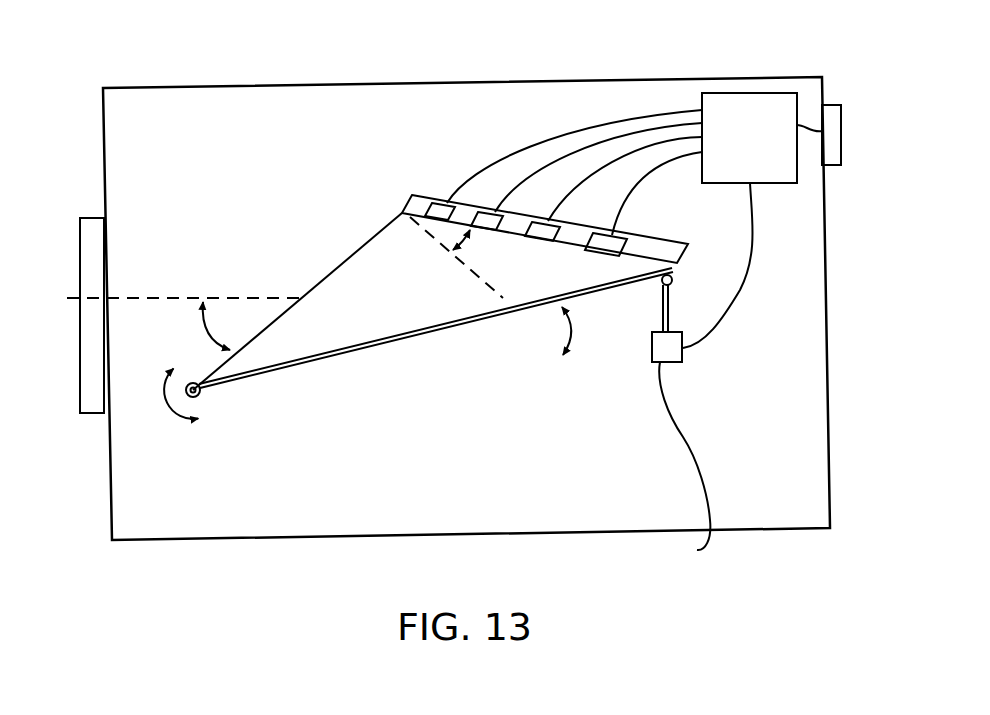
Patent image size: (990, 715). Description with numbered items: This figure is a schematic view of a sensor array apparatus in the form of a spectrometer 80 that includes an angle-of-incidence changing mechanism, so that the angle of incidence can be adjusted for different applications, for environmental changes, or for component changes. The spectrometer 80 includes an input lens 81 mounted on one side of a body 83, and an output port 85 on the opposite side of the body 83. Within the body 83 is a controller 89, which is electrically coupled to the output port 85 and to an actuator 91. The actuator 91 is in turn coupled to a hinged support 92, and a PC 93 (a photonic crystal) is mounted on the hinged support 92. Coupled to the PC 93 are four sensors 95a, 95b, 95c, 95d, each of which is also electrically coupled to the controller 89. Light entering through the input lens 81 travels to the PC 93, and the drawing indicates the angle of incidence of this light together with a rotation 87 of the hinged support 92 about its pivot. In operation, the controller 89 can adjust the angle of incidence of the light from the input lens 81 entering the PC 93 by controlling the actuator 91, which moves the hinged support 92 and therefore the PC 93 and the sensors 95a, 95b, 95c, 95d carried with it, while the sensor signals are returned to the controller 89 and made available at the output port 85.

The spectrometer 80 is at (77, 68).
The input lens 81 is at (90, 218).
The body 83 is at (240, 88).
The output port 85 is at (833, 105).
The rotation of prism about pivot 87 is at (330, 400).
The controller 89 is at (765, 151).
The actuator 91 is at (697, 550).
The hinged support 92 is at (380, 348).
The PC 93 is at (395, 308).
The sensor 95a is at (431, 200).
The sensor 95b is at (476, 210).
The sensor 95c is at (530, 221).
The sensor 95d is at (592, 232).